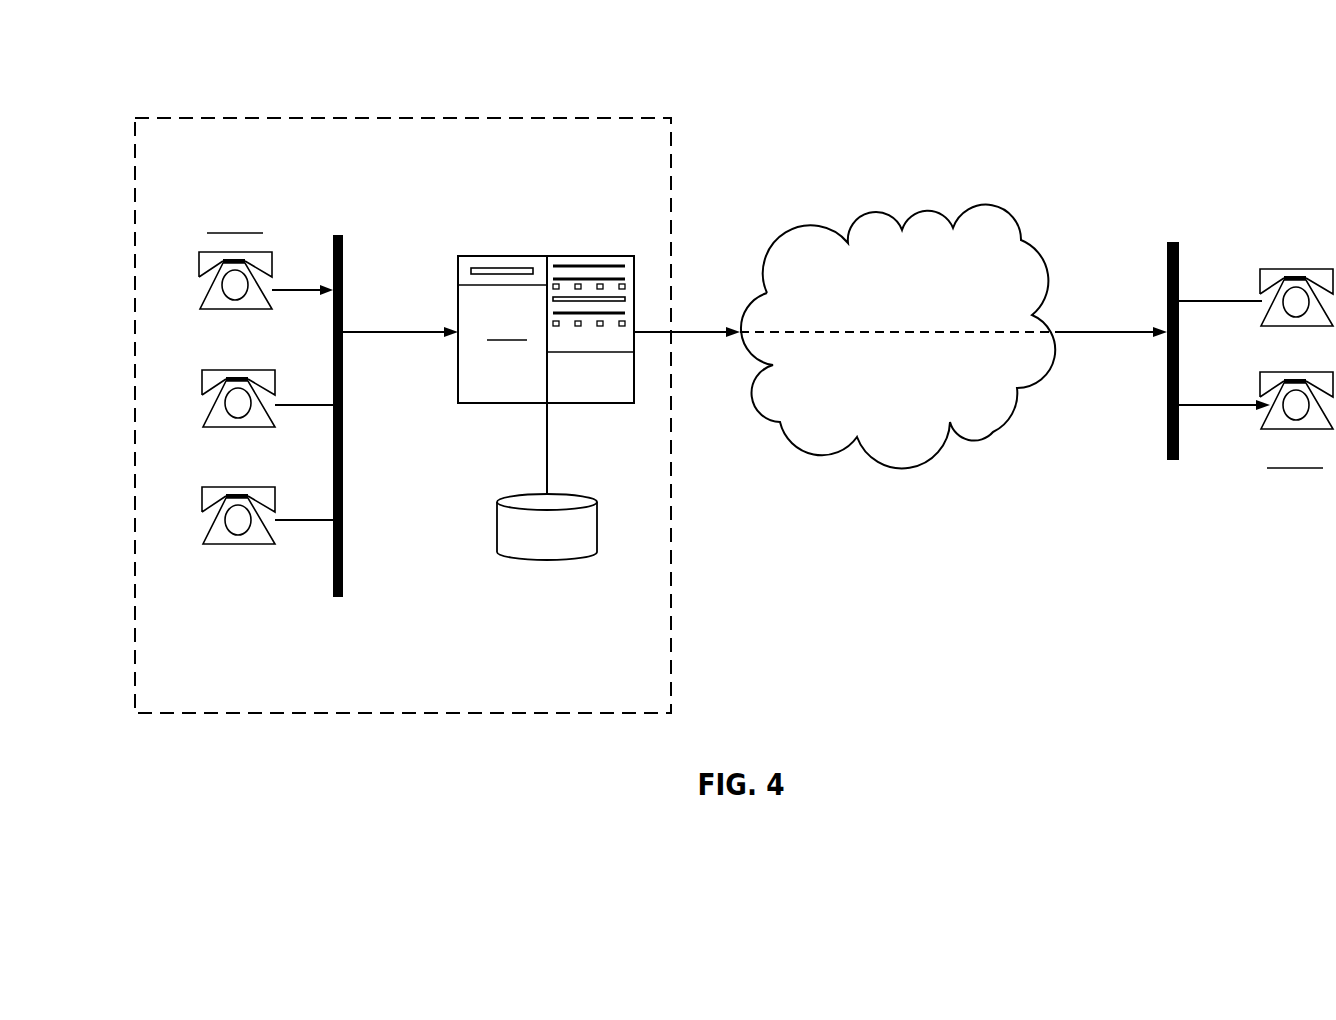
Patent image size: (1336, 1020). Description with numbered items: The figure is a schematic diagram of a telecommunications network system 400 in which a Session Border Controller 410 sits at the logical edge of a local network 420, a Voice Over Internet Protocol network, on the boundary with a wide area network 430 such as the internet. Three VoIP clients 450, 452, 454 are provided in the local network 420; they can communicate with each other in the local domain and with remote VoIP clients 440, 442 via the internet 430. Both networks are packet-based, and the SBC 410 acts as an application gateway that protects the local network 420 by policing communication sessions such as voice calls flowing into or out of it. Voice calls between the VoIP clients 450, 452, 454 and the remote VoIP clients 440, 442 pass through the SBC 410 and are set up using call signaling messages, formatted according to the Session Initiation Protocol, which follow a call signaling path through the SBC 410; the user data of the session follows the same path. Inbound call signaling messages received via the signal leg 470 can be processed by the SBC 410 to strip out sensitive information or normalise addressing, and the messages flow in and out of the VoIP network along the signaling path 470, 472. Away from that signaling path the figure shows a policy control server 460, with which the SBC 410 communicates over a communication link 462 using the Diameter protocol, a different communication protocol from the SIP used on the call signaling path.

The telecommunications network system 400 is at (316, 803).
The Session Border Controller 410 is at (523, 255).
The local network 420 is at (458, 118).
The wide area network 430 is at (993, 432).
The remote VoIP client 440 is at (1294, 267).
The remote VoIP client 442 is at (1275, 400).
The VoIP client 450 is at (200, 302).
The VoIP client 452 is at (203, 420).
The VoIP client 454 is at (203, 537).
The policy control server 460 is at (552, 560).
The communication link 462 is at (547, 448).
The signal leg 470 is at (393, 333).
The signaling path 472 is at (695, 333).